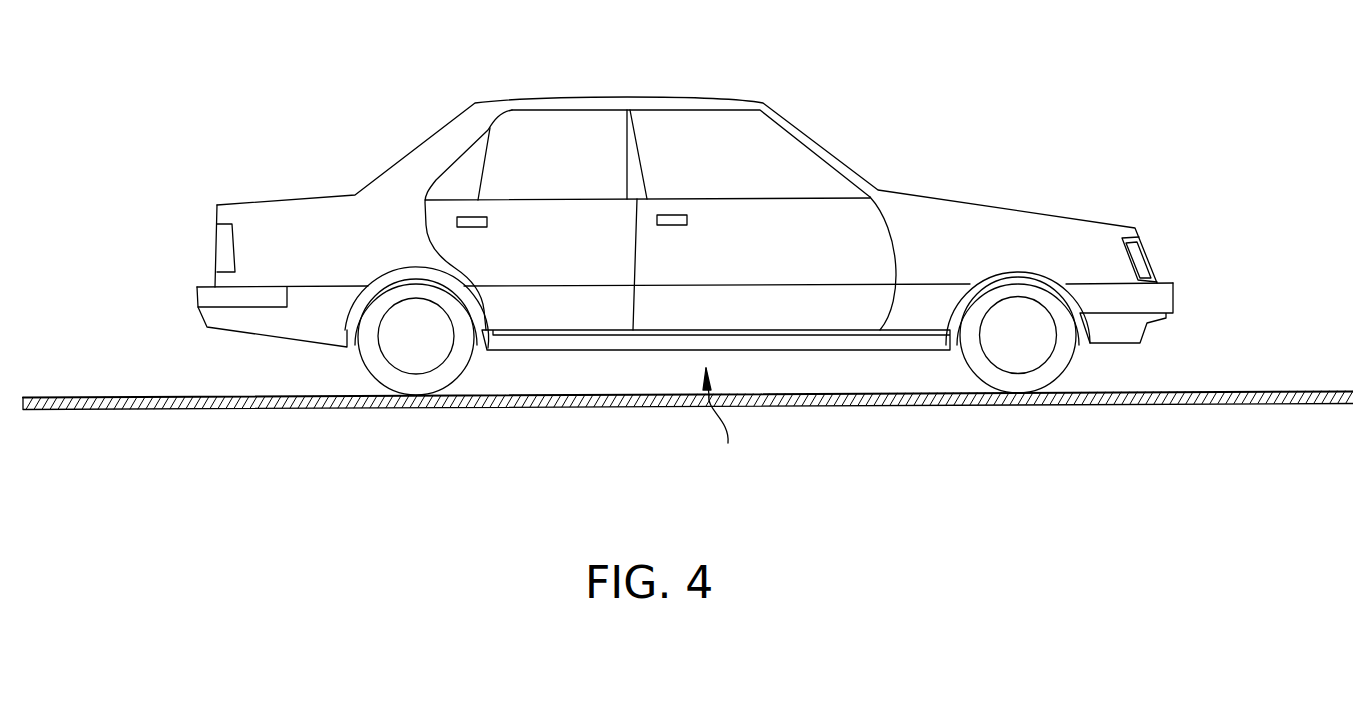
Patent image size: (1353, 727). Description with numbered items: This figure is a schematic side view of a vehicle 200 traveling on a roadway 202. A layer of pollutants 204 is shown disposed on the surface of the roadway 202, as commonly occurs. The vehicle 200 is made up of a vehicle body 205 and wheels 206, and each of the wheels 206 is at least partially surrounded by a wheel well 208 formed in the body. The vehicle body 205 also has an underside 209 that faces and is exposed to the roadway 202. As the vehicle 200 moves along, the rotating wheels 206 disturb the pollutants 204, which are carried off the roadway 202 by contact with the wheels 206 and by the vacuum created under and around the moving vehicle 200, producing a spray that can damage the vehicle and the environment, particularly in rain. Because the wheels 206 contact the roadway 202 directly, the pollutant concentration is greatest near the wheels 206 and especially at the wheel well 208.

The vehicle 200 is at (495, 102).
The roadway 202 is at (145, 417).
The layer of pollutants 204 is at (117, 395).
The vehicle body 205 is at (1127, 223).
The wheels 206 is at (363, 370).
The wheel well 208 is at (393, 270).
The underside 209 is at (724, 420).